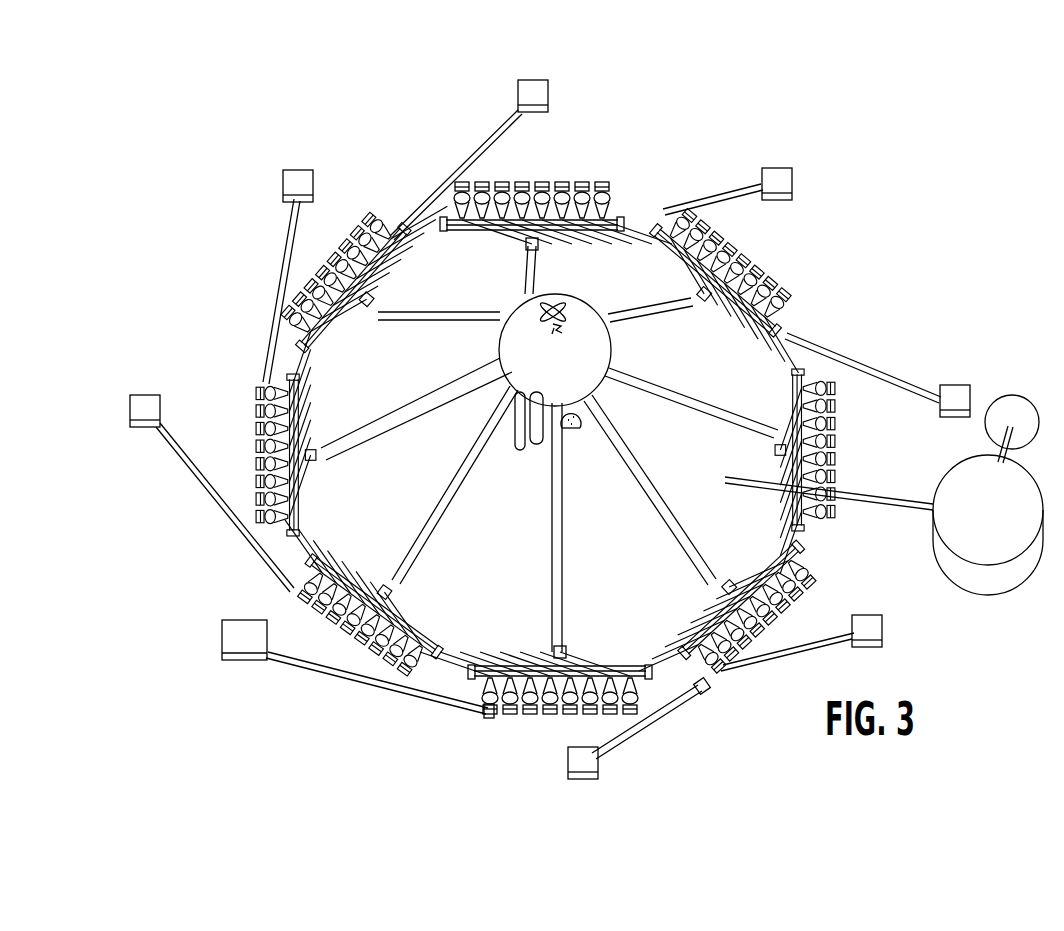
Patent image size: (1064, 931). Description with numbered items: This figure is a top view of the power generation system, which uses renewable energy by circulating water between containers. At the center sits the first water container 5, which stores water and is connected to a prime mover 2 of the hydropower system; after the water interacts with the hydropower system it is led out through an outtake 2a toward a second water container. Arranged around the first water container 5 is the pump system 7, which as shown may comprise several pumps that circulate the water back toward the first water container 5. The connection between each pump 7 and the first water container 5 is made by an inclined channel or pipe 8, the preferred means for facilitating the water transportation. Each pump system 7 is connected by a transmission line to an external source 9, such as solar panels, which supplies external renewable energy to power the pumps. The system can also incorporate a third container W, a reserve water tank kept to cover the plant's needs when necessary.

The prime mover 2 is at (578, 429).
The outtake 2a is at (538, 453).
The first water container 5 is at (611, 338).
The pump system 7 is at (520, 718).
The inclined channel or pipe 8 is at (567, 553).
The external source 9 is at (147, 394).
The third container W is at (992, 598).